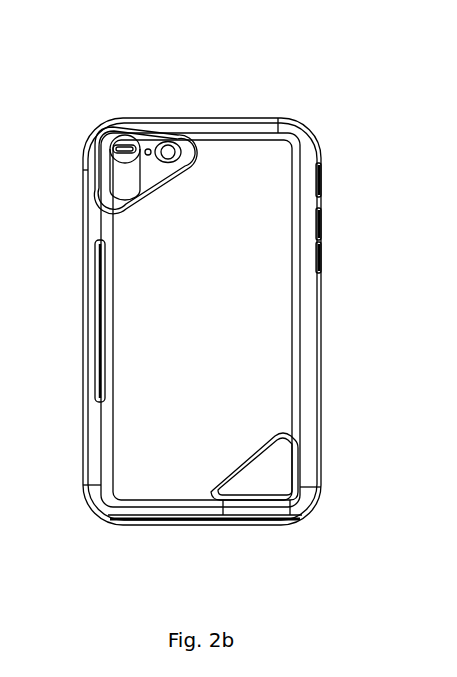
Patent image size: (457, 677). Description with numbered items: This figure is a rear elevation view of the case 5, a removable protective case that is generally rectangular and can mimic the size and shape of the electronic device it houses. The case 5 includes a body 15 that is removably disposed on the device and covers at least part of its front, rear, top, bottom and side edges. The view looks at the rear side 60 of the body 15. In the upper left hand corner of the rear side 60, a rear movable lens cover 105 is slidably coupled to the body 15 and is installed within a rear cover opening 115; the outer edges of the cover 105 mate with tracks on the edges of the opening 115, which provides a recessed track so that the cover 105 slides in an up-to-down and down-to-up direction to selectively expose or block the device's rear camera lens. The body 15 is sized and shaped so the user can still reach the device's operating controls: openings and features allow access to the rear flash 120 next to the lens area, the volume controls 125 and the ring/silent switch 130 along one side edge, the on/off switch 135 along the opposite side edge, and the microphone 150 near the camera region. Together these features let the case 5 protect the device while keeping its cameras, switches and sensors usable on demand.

The case 5 is at (307, 90).
The body 15 is at (270, 283).
The rear side 60 is at (219, 366).
The rear movable lens cover 105 is at (128, 141).
The rear cover opening 115 is at (80, 143).
The rear flash 120 is at (151, 150).
The volume controls 125 is at (322, 222).
The ring/silent switch 130 is at (322, 183).
The on/off switch 135 is at (83, 213).
The microphone 150 is at (170, 145).